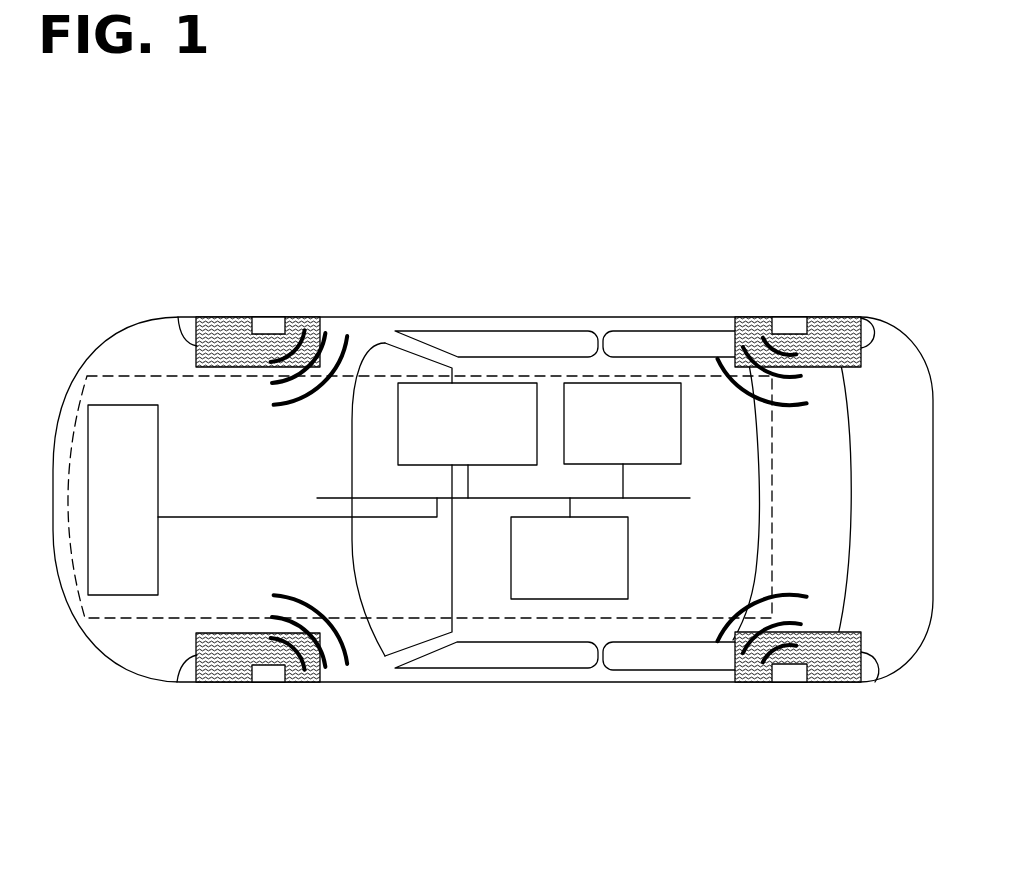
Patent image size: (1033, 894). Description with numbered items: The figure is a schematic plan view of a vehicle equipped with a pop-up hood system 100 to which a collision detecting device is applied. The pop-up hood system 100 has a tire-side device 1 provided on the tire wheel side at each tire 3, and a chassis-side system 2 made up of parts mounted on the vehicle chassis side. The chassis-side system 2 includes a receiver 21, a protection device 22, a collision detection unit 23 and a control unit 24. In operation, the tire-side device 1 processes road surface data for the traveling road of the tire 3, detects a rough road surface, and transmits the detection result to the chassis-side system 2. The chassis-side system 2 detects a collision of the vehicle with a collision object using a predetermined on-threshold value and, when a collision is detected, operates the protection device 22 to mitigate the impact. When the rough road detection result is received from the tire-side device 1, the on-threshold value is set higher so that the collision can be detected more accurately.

The pop-up hood system 100 is at (407, 293).
The tire-side device 1 is at (265, 326).
The chassis-side system 2 is at (706, 375).
The tire 3 is at (178, 317).
The receiver 21 is at (572, 599).
The protection device 22 is at (481, 383).
The collision detection unit 23 is at (118, 598).
The control unit 24 is at (633, 383).